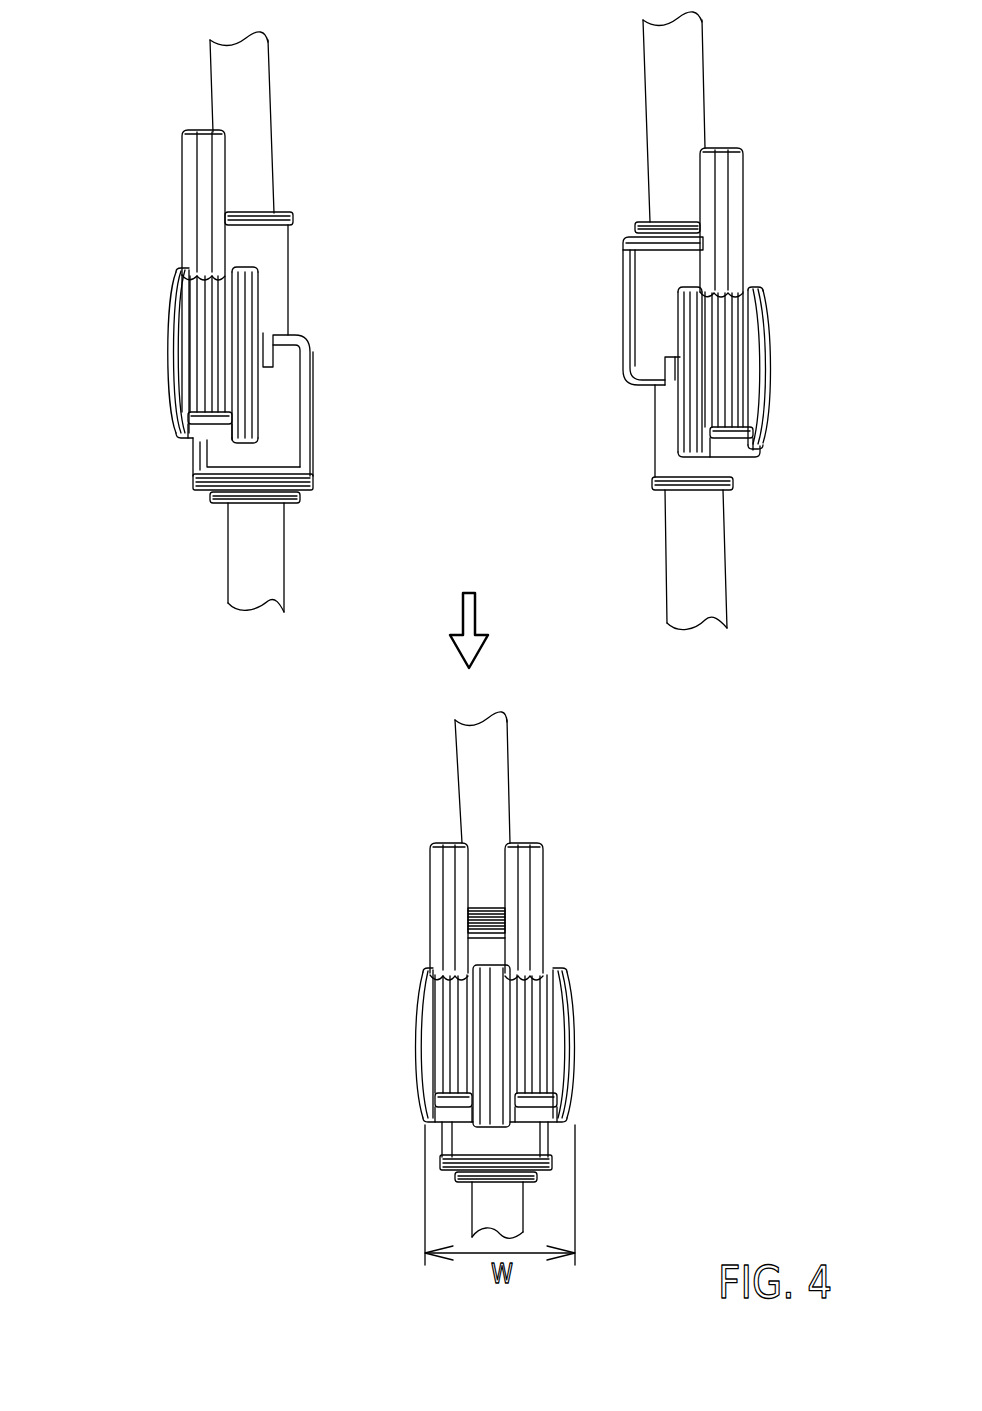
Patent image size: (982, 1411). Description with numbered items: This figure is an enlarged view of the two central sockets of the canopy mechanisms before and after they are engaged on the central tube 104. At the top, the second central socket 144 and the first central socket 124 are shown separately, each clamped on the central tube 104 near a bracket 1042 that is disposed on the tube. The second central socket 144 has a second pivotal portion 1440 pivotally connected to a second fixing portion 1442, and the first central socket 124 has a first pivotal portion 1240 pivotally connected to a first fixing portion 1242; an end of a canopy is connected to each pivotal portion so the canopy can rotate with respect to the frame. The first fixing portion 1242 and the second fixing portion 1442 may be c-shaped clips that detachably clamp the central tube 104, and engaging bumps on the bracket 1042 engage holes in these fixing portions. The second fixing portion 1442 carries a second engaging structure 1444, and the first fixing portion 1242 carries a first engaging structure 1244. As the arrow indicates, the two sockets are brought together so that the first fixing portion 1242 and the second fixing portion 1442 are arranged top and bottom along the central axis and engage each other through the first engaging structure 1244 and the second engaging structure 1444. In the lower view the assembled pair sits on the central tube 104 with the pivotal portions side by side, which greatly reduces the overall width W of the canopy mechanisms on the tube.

The central tube 104 is at (257, 117).
The bracket 1042 is at (275, 252).
The first central socket 124 is at (764, 460).
The first pivotal portion 1240 is at (737, 183).
The first fixing portion 1242 is at (623, 302).
The first engaging structure 1244 is at (675, 382).
The second central socket 144 is at (188, 490).
The second pivotal portion 1440 is at (183, 187).
The second fixing portion 1442 is at (193, 465).
The second engaging structure 1444 is at (263, 338).